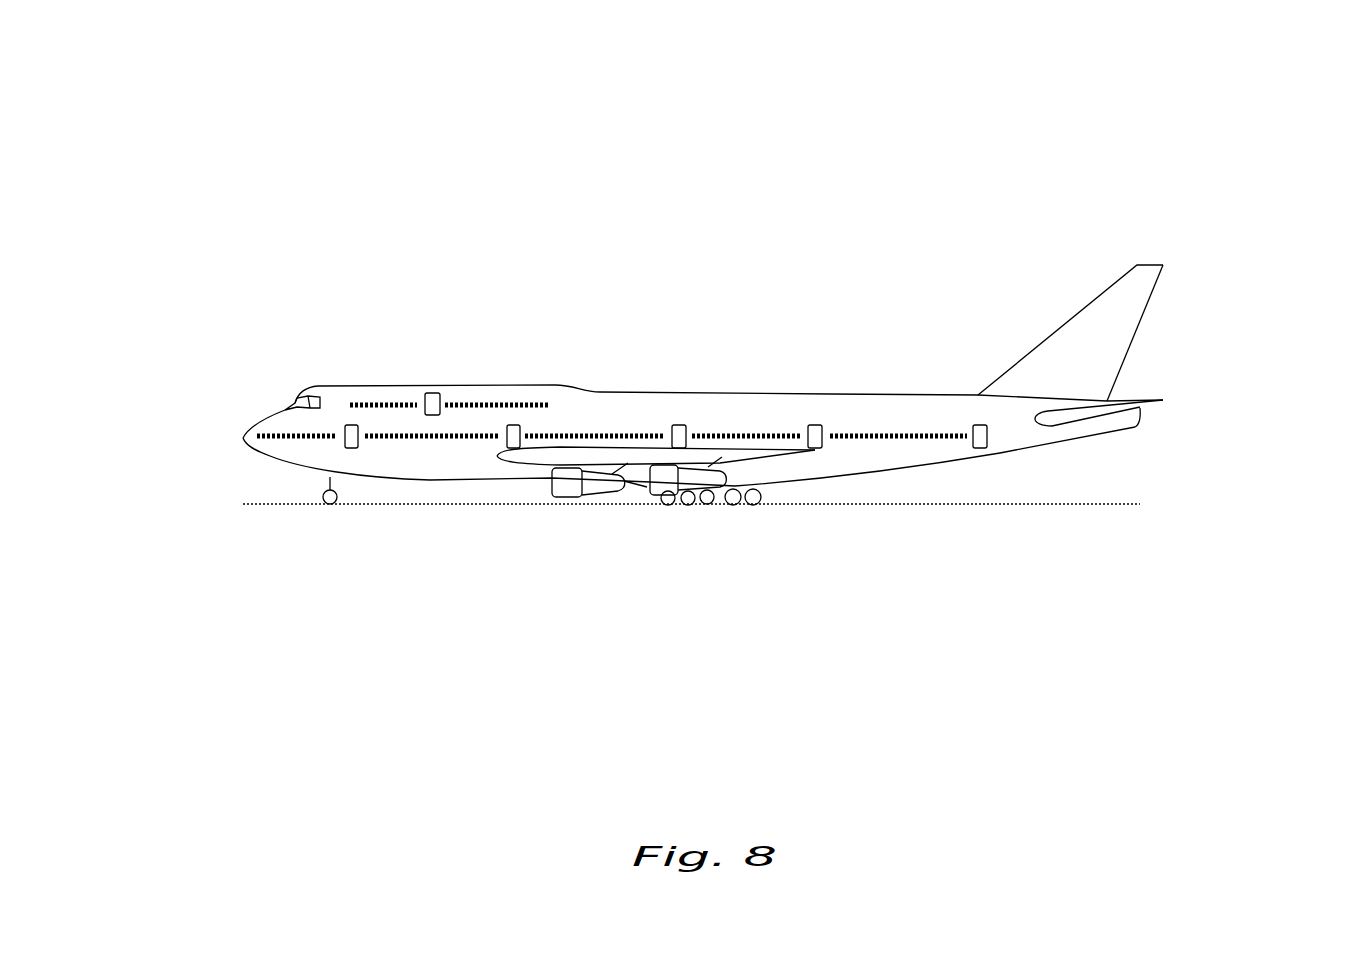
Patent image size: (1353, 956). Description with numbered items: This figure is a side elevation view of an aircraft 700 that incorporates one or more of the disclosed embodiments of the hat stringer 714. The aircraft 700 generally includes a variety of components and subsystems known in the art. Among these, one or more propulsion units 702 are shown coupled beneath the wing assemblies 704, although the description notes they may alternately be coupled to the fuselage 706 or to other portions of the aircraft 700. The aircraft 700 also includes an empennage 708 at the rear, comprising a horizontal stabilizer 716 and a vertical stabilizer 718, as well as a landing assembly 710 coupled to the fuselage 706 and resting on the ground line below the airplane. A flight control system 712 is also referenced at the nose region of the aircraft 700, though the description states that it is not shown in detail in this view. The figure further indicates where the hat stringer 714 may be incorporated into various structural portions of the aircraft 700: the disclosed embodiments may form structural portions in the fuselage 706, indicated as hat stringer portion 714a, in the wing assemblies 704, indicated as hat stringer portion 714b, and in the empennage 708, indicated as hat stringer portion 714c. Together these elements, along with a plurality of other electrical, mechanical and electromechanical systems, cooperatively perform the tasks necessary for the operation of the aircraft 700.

The aircraft 700 is at (222, 153).
The propulsion units 702 is at (553, 493).
The wing assemblies 704 is at (545, 452).
The fuselage 706 is at (710, 393).
The empennage 708 is at (1166, 352).
The landing assembly 710 is at (325, 493).
The flight control system 712 is at (283, 407).
The hat stringer 714 is at (983, 285).
The hat stringer structural portion in fuselage 714a is at (668, 390).
The hat stringer structural portion in wing assemblies 714b is at (587, 447).
The hat stringer structural portion in empennage 714c is at (1159, 318).
The horizontal stabilizer 716 is at (1088, 417).
The vertical stabilizer 718 is at (1150, 264).